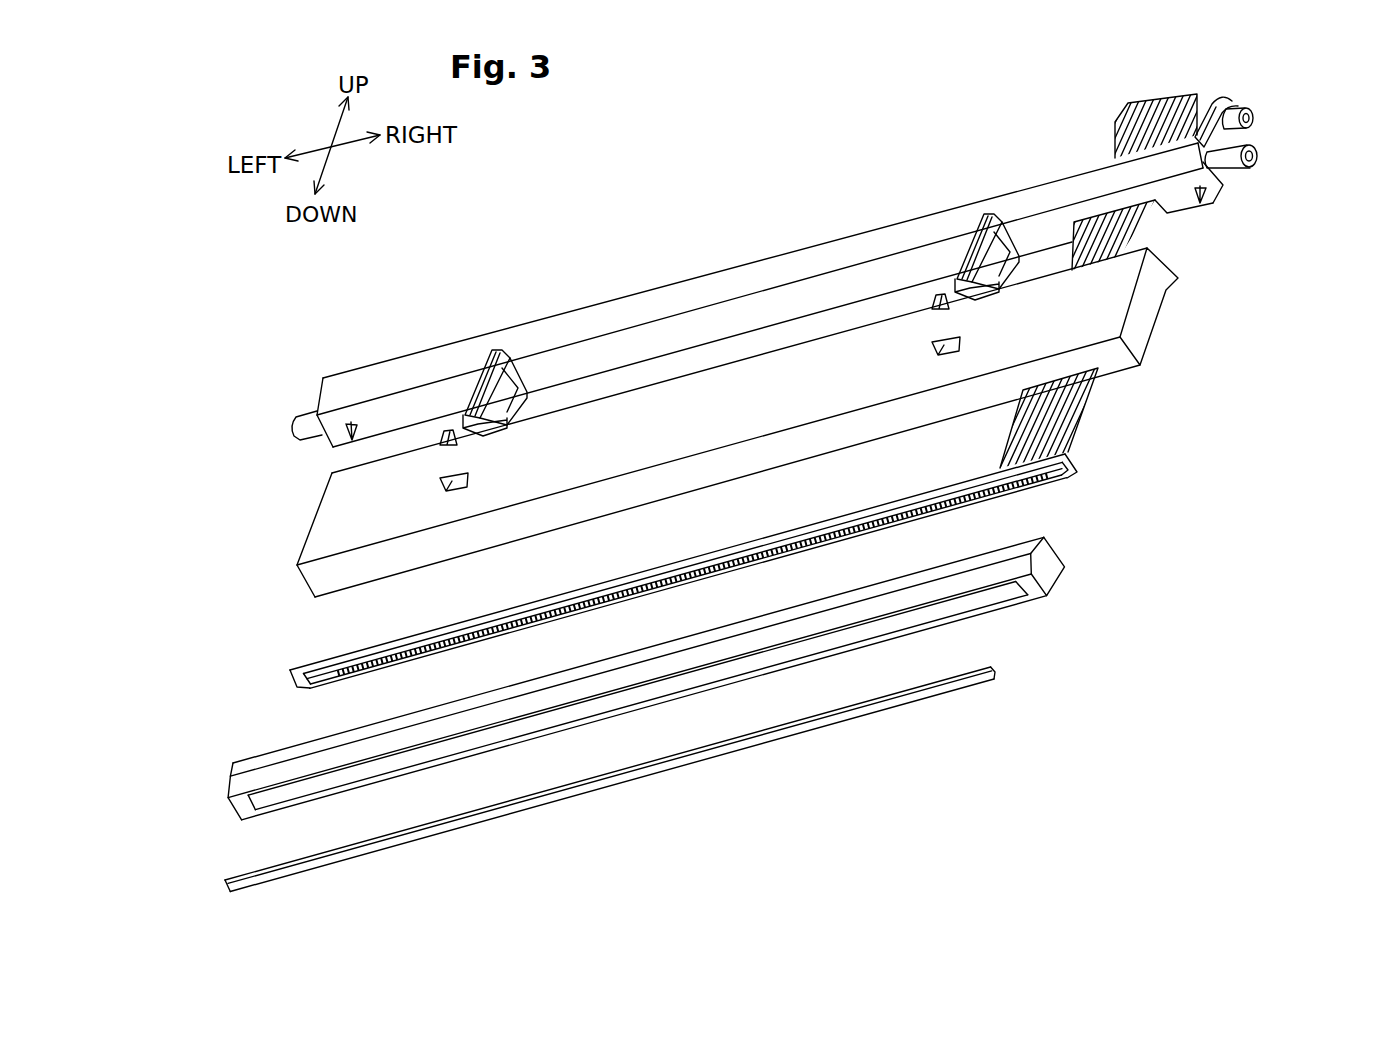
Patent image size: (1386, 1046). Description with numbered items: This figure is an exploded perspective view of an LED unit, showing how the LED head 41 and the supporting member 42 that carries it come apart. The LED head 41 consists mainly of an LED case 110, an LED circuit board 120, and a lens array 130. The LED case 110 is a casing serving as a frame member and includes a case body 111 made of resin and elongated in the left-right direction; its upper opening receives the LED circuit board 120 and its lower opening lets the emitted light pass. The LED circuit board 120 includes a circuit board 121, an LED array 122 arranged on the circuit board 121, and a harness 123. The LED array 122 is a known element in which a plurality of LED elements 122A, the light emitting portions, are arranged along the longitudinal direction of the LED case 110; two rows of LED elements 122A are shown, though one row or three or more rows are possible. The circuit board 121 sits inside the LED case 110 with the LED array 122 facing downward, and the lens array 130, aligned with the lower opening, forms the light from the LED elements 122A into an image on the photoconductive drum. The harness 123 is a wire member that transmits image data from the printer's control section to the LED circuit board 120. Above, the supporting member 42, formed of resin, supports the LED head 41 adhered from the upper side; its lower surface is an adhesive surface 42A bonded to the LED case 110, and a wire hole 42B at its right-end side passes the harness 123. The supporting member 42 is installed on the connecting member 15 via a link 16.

The connecting member 15 is at (1272, 152).
The link 16 is at (484, 392).
The LED head 41 is at (1217, 497).
The supporting member 42 is at (754, 406).
The adhesive surface 42A is at (320, 580).
The wire hole 42B is at (1105, 366).
The LED case 110 is at (670, 678).
The case body 111 is at (231, 773).
The LED circuit board 120 is at (701, 555).
The circuit board 121 is at (300, 670).
The LED array 122 is at (640, 602).
The LED element 122A is at (329, 680).
The harness 123 is at (1077, 415).
The lens array 130 is at (1010, 661).